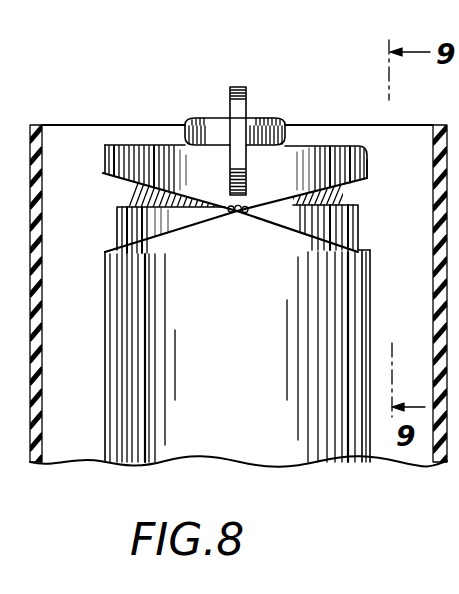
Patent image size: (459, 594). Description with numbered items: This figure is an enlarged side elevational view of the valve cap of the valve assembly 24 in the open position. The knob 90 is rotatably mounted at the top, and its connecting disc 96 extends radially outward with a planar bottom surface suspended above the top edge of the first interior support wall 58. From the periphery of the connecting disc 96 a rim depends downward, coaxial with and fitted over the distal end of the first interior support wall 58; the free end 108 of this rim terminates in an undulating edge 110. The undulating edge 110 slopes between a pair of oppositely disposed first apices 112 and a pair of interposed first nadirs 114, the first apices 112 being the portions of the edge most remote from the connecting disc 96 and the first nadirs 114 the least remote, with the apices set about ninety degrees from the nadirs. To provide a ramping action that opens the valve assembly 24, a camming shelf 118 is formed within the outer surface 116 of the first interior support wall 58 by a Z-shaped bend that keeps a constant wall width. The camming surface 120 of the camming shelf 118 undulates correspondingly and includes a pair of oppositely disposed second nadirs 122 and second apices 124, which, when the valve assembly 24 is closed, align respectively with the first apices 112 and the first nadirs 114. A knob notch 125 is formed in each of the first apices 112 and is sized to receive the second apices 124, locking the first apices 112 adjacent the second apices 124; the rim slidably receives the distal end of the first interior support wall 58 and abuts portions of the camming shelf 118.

The valve assembly 24 is at (267, 111).
The first interior support wall 58 is at (138, 212).
The knob 90 is at (120, 152).
The connecting disc 96 is at (152, 145).
The free end of the rim 108 is at (207, 198).
The undulating edge 110 is at (338, 186).
The first apices 112 is at (247, 206).
The first nadirs 114 is at (367, 178).
The outer surface 116 is at (287, 312).
The camming shelf 118 is at (358, 216).
The camming surface 120 is at (366, 248).
The second nadirs 122 is at (366, 255).
The second apices 124 is at (236, 213).
The knob notch 125 is at (228, 208).